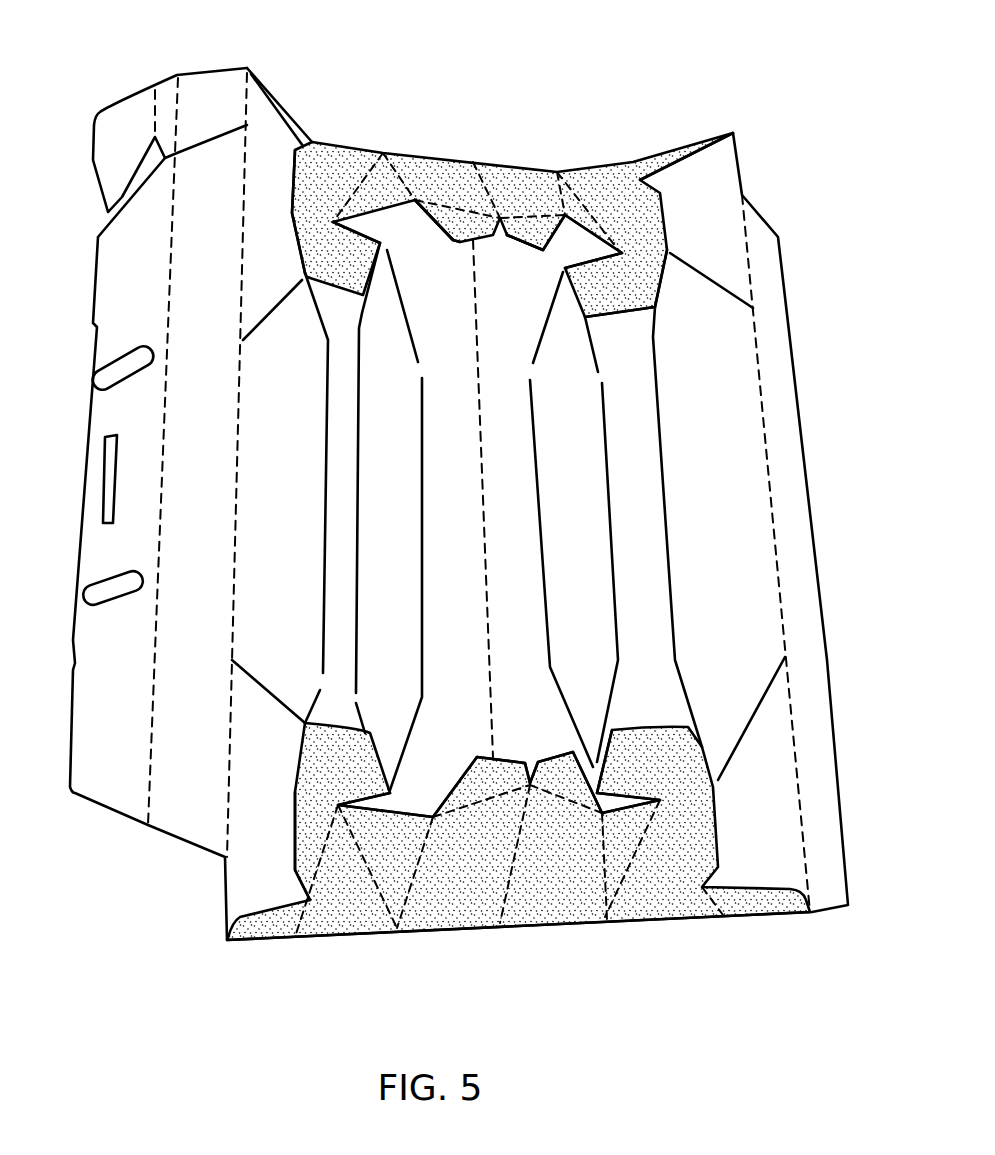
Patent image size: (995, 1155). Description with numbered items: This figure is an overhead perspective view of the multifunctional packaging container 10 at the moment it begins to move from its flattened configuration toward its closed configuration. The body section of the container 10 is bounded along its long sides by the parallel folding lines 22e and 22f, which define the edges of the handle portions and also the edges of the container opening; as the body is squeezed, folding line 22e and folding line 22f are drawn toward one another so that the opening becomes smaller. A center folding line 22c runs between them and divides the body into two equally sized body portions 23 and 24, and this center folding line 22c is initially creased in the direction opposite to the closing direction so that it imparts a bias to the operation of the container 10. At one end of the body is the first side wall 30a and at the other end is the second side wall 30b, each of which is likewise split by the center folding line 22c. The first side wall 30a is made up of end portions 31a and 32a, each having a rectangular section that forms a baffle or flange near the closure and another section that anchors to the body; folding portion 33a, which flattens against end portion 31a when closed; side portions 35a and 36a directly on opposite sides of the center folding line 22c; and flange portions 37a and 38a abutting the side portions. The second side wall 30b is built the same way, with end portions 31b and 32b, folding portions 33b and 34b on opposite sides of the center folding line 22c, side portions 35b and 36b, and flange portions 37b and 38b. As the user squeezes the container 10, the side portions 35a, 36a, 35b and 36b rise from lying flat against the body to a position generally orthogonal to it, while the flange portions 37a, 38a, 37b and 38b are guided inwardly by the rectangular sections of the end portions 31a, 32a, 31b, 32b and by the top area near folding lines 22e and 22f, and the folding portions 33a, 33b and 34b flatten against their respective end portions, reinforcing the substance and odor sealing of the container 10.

The multifunctional packaging container 10 is at (775, 87).
The center folding line 22c is at (478, 390).
The folding line 22e is at (233, 550).
The folding line 22f is at (777, 558).
The body portion 23 is at (402, 416).
The body portion 24 is at (580, 416).
The first side wall 30a is at (531, 931).
The second side wall 30b is at (436, 156).
The end portion 31a is at (357, 917).
The end portion 31b is at (345, 185).
The end portion 32a is at (686, 887).
The end portion 32b is at (655, 221).
The folding portion 33a is at (406, 857).
The folding portion 33b is at (398, 201).
The folding portion 34b is at (573, 210).
The side portion 35a is at (483, 882).
The side portion 35b is at (462, 194).
The side portion 36a is at (568, 882).
The side portion 36b is at (539, 203).
The flange portion 37a is at (506, 785).
The flange portion 37b is at (457, 226).
The flange portion 38a is at (576, 787).
The flange portion 38b is at (532, 236).